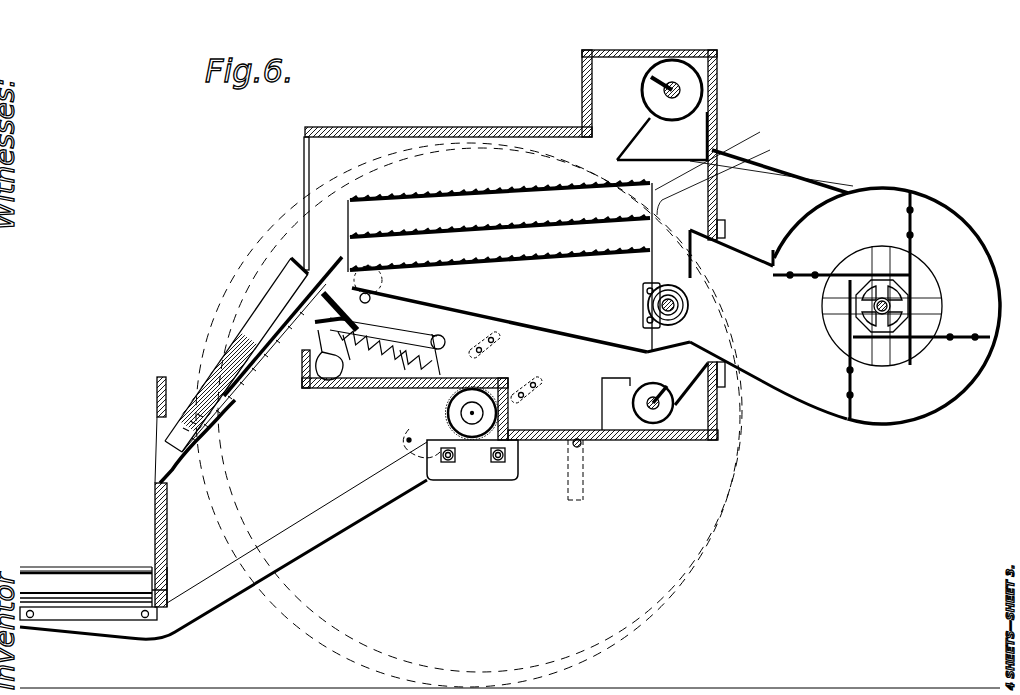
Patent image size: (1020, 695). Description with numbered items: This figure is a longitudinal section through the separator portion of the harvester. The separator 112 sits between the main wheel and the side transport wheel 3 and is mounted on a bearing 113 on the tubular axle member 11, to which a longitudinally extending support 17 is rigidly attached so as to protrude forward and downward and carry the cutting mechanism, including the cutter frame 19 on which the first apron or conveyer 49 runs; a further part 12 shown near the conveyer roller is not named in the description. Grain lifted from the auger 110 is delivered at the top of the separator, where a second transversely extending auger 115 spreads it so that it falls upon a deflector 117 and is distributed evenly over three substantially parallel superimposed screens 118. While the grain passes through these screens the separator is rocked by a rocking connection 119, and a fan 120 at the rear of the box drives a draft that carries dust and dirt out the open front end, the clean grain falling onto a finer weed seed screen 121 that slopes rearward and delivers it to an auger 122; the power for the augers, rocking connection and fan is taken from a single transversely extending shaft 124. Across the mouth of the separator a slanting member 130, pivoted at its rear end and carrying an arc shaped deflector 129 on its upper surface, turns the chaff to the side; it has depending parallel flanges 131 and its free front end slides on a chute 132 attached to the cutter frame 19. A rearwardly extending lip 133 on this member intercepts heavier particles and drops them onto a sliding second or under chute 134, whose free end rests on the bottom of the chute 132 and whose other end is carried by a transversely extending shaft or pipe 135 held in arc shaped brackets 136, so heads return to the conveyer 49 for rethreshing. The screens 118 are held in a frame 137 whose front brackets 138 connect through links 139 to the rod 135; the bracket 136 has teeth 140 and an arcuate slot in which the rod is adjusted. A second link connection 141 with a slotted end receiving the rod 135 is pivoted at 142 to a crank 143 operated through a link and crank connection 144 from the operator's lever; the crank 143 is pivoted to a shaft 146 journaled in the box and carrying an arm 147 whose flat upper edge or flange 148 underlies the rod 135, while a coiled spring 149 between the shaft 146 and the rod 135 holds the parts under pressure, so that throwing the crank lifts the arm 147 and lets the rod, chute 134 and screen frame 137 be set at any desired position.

The side transport wheel 3 is at (722, 525).
The tubular axle member 11 is at (468, 422).
The roller shaft 12 is at (478, 417).
The longitudinally extending support 17 is at (208, 608).
The cutter frame 19 is at (168, 570).
The first apron or conveyer 49 is at (88, 566).
The auger 110 is at (300, 200).
The separator 112 is at (477, 126).
The bearing 113 is at (475, 424).
The second transversely extending auger 115 is at (684, 64).
The deflector 117 is at (648, 136).
The screens 118 is at (764, 170).
The rocking connection 119 is at (680, 315).
The fan 120 is at (912, 197).
The weed seed screen 121 is at (650, 354).
The auger 122 is at (683, 441).
The transversely extending shaft 124 is at (648, 424).
The arc shaped deflector 129 is at (264, 348).
The slanting member 130 is at (299, 313).
The depending parallel flanges 131 is at (246, 430).
The chute 132 is at (156, 470).
The rearwardly extending lip 133 is at (338, 262).
The second or under chute 134 is at (250, 370).
The transversely extending shaft or pipe 135 is at (322, 372).
The brackets 136 is at (312, 296).
The screen frame 137 is at (698, 160).
The brackets 138 is at (385, 305).
The links 139 is at (318, 283).
The teeth 140 is at (380, 334).
The second link connection 141 is at (338, 378).
The pivot 142 is at (445, 452).
The crank 143 is at (420, 437).
The link and crank connection 144 is at (560, 488).
The shaft 146 is at (440, 480).
The arm 147 is at (372, 380).
The flat upper edge or flange 148 is at (300, 396).
The coiled spring 149 is at (405, 388).